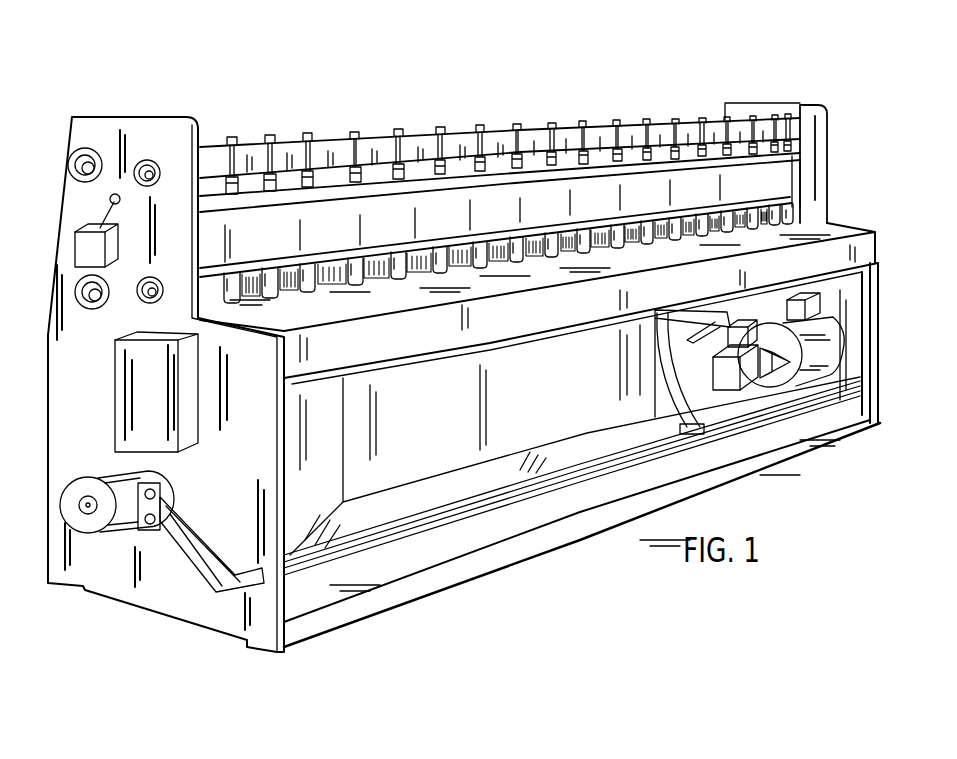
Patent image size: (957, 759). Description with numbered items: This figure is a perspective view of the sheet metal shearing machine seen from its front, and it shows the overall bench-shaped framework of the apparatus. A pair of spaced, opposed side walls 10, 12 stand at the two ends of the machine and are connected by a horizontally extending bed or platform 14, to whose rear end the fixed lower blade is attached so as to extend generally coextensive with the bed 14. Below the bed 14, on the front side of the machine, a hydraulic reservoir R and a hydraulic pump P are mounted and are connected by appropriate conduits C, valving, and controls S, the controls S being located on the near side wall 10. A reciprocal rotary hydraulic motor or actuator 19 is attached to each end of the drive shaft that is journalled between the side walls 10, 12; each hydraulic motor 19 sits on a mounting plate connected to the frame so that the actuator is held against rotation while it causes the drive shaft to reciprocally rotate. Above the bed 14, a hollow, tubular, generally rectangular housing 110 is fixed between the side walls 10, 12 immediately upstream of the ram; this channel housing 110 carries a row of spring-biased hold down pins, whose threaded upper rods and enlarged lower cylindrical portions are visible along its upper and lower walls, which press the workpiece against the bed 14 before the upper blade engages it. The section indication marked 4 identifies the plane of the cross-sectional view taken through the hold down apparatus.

The side wall 10 is at (242, 479).
The tubular housing 110 is at (790, 190).
The bed 14 is at (838, 228).
The side wall 12 is at (858, 307).
The rotary hydraulic motor 19 is at (80, 488).
The controls S is at (83, 245).
The hydraulic pump P is at (835, 343).
The hydraulic reservoir R is at (545, 388).
The conduits C is at (195, 568).
The section line 4- 4 is at (499, 600).